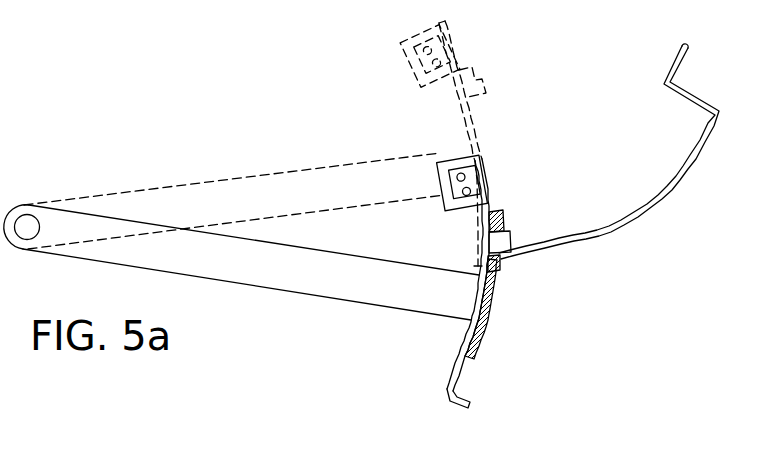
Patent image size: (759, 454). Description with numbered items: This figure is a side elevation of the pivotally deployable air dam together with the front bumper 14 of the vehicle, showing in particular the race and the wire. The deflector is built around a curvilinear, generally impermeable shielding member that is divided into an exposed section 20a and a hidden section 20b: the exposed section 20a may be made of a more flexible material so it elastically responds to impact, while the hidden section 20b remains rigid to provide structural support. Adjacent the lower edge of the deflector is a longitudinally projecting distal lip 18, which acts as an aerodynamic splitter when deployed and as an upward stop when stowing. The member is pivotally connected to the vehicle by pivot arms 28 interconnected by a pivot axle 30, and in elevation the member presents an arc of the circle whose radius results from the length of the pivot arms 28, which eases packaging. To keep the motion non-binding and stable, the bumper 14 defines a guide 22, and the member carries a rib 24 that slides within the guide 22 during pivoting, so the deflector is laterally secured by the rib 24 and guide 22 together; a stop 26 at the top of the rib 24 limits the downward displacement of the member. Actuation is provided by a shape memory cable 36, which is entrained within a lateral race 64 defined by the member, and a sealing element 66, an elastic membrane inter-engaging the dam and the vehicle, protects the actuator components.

The front bumper 14 is at (610, 230).
The distal lip 18 is at (467, 403).
The exposed section 20a is at (463, 372).
The hidden section 20b is at (490, 190).
The guide 22 is at (492, 239).
The rib 24 is at (483, 320).
The stop 26 is at (507, 220).
The pivot arm 28 is at (312, 272).
The pivot axle 30 is at (27, 226).
The cable 36 is at (440, 172).
The lateral race 64 is at (452, 150).
The sealing element 66 is at (500, 268).